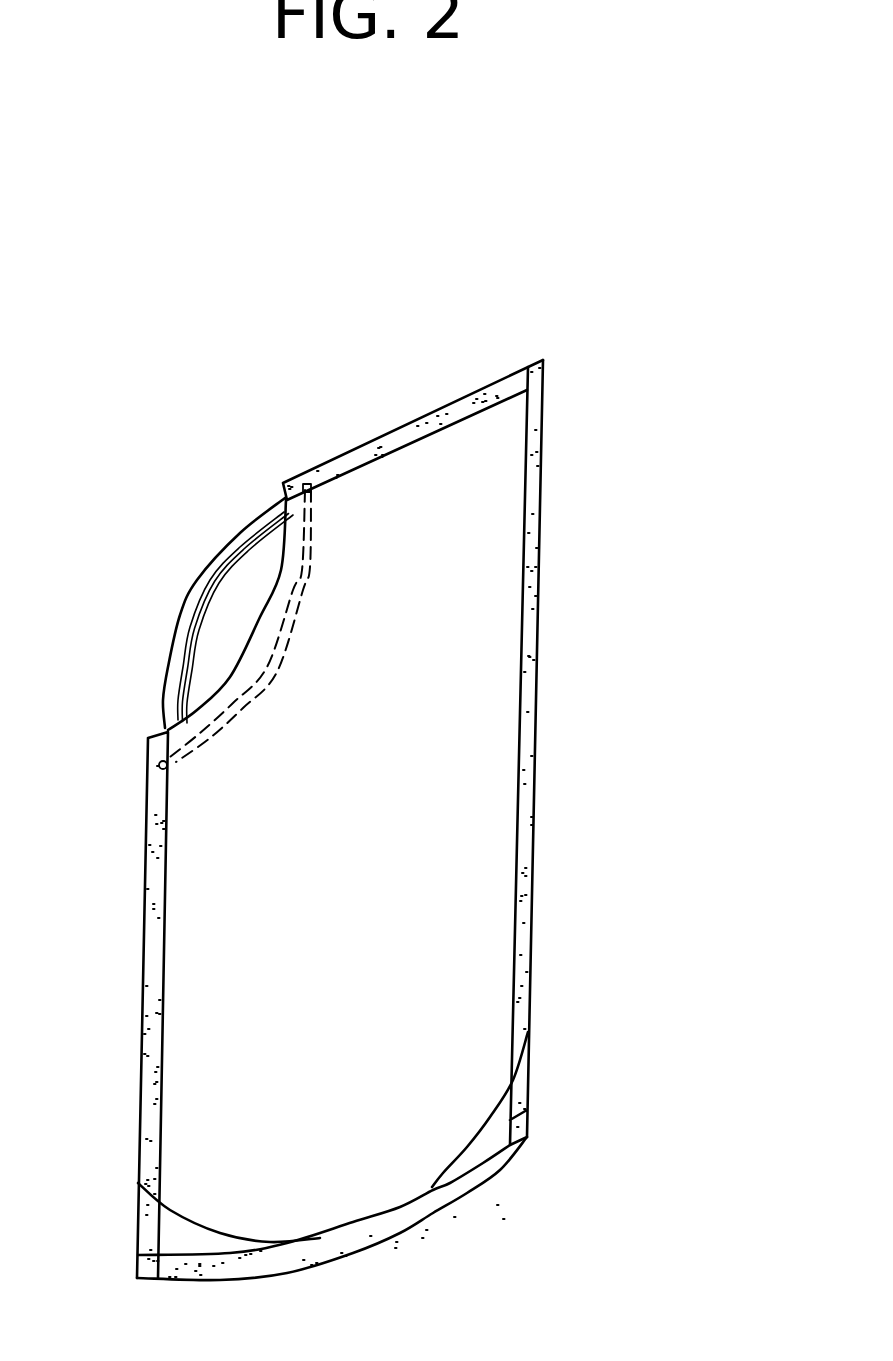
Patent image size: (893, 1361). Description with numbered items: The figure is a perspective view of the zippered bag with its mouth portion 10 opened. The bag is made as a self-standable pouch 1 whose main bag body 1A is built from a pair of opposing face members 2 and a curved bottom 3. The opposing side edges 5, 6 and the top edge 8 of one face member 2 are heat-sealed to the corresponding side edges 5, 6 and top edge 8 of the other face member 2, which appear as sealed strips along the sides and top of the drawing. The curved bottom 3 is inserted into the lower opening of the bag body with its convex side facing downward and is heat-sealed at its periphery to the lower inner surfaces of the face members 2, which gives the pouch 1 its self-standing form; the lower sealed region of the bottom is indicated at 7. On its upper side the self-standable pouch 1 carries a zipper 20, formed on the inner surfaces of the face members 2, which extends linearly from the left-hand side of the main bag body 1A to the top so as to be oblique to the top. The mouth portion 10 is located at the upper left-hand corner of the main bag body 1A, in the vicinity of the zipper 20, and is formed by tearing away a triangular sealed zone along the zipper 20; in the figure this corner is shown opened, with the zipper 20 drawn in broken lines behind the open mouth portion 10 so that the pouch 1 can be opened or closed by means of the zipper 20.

The self-standable pouch 1 is at (235, 320).
The main bag body 1A is at (479, 576).
The face member 2 is at (455, 810).
The curved bottom 3 is at (387, 1210).
The left-hand side edge 5 is at (143, 978).
The side edge 6 is at (538, 640).
The bottom seal 7 is at (380, 1243).
The top edge 8 is at (475, 388).
The mouth portion 10 is at (172, 645).
The zipper 20 is at (318, 533).